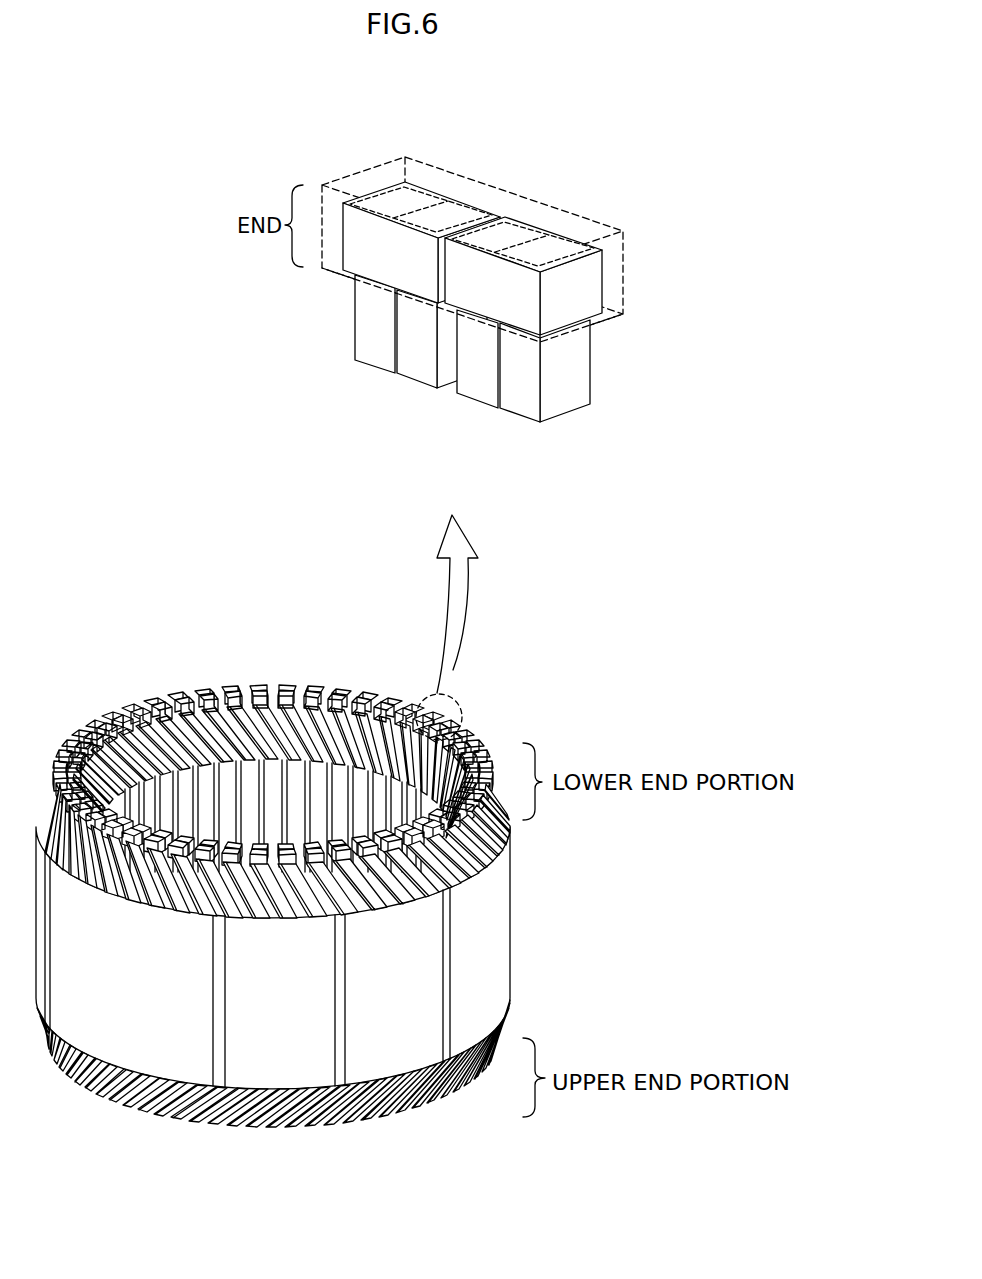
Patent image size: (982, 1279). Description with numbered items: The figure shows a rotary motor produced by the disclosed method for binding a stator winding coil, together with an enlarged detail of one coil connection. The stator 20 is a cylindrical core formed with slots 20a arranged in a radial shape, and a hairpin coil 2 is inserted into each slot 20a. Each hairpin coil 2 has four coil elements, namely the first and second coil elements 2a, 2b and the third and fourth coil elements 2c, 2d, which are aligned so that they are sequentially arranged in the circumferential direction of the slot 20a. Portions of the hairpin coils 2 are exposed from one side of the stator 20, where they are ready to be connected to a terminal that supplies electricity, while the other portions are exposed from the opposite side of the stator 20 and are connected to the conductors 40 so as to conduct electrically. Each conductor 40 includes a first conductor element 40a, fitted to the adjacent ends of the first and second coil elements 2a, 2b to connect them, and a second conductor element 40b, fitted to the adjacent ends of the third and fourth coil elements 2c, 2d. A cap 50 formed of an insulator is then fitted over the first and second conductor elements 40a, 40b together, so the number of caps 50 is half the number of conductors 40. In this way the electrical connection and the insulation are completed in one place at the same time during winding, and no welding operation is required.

The hairpin coil 2 is at (369, 742).
The first coil element 2a is at (377, 337).
The second coil element 2b is at (418, 358).
The third coil element 2c is at (475, 382).
The fourth coil element 2d is at (520, 402).
The stator 20 is at (490, 965).
The slot 20a is at (508, 881).
The conductor 40 is at (541, 245).
The first conductor element 40a is at (457, 198).
The second conductor element 40b is at (605, 277).
The cap 50 is at (462, 175).